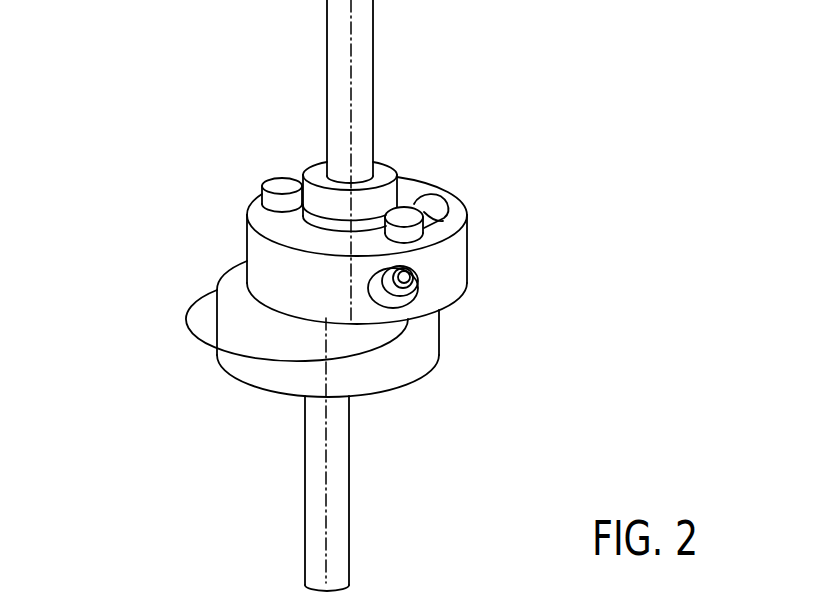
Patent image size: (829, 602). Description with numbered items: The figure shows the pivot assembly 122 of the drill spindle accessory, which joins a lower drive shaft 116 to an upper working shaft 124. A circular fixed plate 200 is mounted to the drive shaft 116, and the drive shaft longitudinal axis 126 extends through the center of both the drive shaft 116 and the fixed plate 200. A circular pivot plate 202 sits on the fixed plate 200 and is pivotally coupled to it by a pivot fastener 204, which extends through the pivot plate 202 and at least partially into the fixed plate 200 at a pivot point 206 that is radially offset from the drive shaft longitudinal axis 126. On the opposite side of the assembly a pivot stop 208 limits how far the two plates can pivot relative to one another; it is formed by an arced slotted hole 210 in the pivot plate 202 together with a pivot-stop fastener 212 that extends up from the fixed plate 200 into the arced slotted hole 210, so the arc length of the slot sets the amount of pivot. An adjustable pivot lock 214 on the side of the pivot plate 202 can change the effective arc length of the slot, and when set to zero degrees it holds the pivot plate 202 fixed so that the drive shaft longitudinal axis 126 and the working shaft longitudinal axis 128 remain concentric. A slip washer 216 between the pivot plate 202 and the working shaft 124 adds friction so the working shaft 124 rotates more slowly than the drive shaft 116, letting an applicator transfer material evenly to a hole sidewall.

The pivot assembly 122 is at (168, 56).
The working shaft 124 is at (373, 33).
The working shaft longitudinal axis 128 is at (351, 78).
The pivot plate 202 is at (470, 247).
The slip washer 216 is at (285, 241).
The pivot stop 208 is at (425, 184).
The pivot fastener 204 is at (262, 193).
The pivot point 206 is at (280, 178).
The arced slotted hole 210 is at (444, 200).
The pivot-stop fastener 212 is at (448, 212).
The adjustable pivot lock 214 is at (430, 292).
The fixed plate 200 is at (217, 327).
The drive shaft 116 is at (349, 430).
The drive shaft longitudinal axis 126 is at (326, 488).